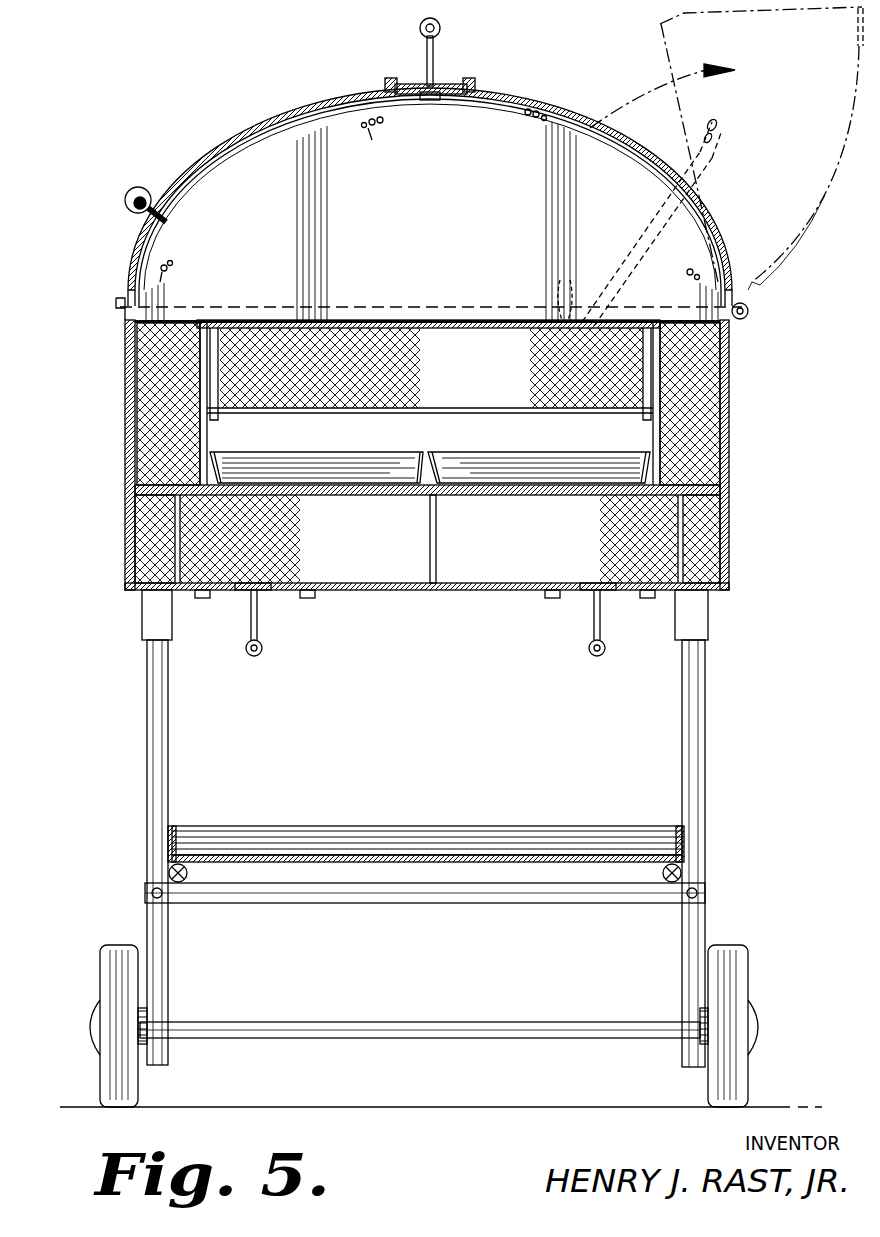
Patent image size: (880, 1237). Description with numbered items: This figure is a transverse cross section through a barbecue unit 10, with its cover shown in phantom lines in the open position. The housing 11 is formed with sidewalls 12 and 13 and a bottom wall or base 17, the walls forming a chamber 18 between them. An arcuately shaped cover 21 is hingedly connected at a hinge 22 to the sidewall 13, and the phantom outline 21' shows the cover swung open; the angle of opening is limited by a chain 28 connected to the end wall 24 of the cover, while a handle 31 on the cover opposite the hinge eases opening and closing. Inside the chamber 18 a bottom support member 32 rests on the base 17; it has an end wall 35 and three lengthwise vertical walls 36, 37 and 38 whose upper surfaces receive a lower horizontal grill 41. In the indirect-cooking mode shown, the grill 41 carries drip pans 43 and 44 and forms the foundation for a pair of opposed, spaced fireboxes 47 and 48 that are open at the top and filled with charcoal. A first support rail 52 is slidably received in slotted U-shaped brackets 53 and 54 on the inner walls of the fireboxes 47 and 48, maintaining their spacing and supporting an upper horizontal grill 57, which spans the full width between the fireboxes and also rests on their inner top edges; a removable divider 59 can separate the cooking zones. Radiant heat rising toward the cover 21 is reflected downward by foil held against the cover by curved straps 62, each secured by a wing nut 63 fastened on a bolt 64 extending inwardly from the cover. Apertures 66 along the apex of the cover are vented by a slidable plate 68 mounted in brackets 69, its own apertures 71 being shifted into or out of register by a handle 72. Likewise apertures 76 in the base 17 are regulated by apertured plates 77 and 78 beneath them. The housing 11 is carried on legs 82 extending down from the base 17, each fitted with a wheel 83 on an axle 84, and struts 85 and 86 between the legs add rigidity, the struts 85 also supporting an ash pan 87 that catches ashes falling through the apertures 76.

The barbecue unit 10 is at (297, 108).
The housing 11 is at (118, 372).
The sidewall 12 is at (125, 418).
The sidewall 13 is at (730, 438).
The bottom wall or base 17 is at (400, 592).
The chamber 18 is at (440, 368).
The cover 21 is at (430, 197).
The cover in open position 21' is at (722, 166).
The hinge 22 is at (750, 315).
The end wall 24 is at (540, 142).
The chain 28 is at (560, 292).
The handle 31 is at (124, 201).
The bottom support member 32 is at (598, 537).
The end wall 35 is at (367, 588).
The lengthwise vertical wall 36 is at (150, 535).
The lengthwise vertical wall 37 is at (440, 585).
The lengthwise vertical wall 38 is at (690, 540).
The lower horizontal grill 41 is at (380, 498).
The drip pan 43 is at (292, 470).
The drip pan 44 is at (550, 472).
The firebox 47 is at (160, 445).
The firebox 48 is at (690, 420).
The first support rail 52 is at (428, 400).
The slotted U-shaped bracket 53 is at (219, 418).
The slotted U-shaped bracket 54 is at (640, 412).
The upper horizontal grill 57 is at (345, 318).
The removable wall or divider 59 is at (440, 247).
The curved strap 62 is at (215, 180).
The wing nut 63 is at (350, 122).
The bolt 64 is at (358, 132).
The aperture 66 is at (430, 103).
The slidable plate 68 is at (450, 82).
The bracket 69 is at (472, 82).
The aperture 71 is at (426, 80).
The handle 72 is at (440, 28).
The aperture 76 is at (242, 583).
The apertured plate 77 is at (292, 600).
The apertured plate 78 is at (560, 600).
The leg 82 is at (150, 730).
The wheel 83 is at (112, 968).
The axle 84 is at (455, 1040).
The strut 85 is at (182, 882).
The strut 86 is at (420, 904).
The ash pan 87 is at (395, 845).